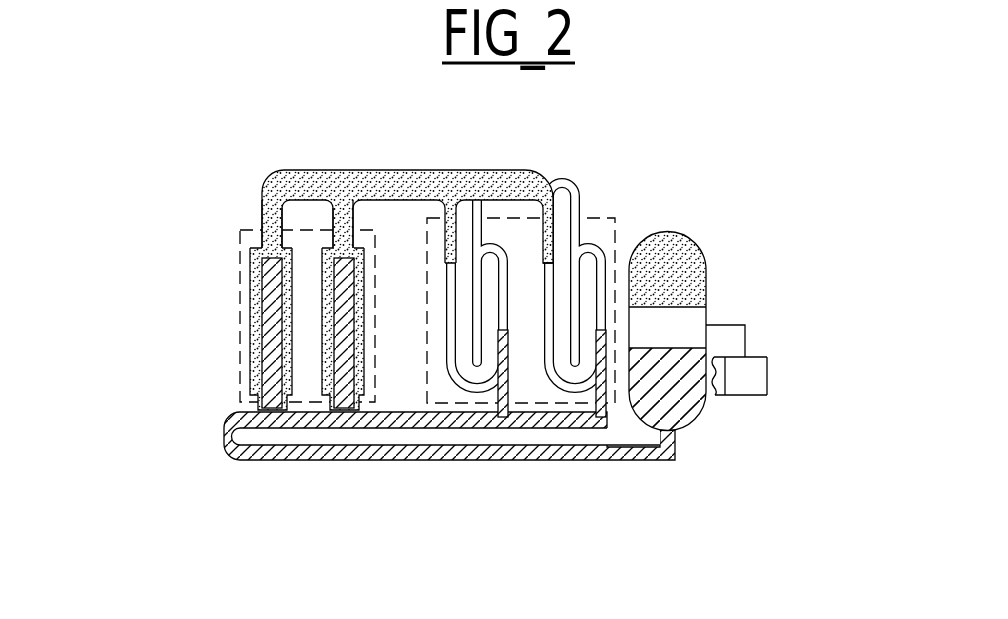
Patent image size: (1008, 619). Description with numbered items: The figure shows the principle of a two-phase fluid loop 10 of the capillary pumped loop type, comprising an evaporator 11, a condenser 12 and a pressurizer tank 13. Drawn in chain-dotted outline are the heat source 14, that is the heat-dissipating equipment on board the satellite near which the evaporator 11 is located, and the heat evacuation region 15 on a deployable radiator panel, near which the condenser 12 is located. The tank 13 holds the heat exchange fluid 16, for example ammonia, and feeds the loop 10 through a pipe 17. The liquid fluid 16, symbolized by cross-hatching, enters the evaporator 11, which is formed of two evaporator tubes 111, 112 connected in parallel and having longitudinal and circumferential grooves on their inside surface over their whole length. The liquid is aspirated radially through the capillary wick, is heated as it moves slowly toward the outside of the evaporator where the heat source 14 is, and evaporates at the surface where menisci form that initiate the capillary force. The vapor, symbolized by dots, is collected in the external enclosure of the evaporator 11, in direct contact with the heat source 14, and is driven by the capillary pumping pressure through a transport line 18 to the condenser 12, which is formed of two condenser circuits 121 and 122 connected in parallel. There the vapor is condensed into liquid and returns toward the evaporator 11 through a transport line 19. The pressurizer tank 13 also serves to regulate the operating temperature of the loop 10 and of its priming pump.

The fluid loop 10 is at (781, 178).
The evaporator 11 is at (250, 396).
The evaporator tube 111 is at (246, 333).
The evaporator tube 112 is at (250, 275).
The condenser 12 is at (534, 326).
The condenser circuit 121 is at (473, 398).
The condenser circuit 122 is at (556, 398).
The pressurizer tank 13 is at (705, 301).
The heat source 14 is at (283, 170).
The heat evacuation region 15 is at (574, 215).
The heat exchange fluid 16 is at (692, 402).
The pipe 17 is at (612, 462).
The transport line 18 is at (385, 170).
The transport line 19 is at (417, 442).